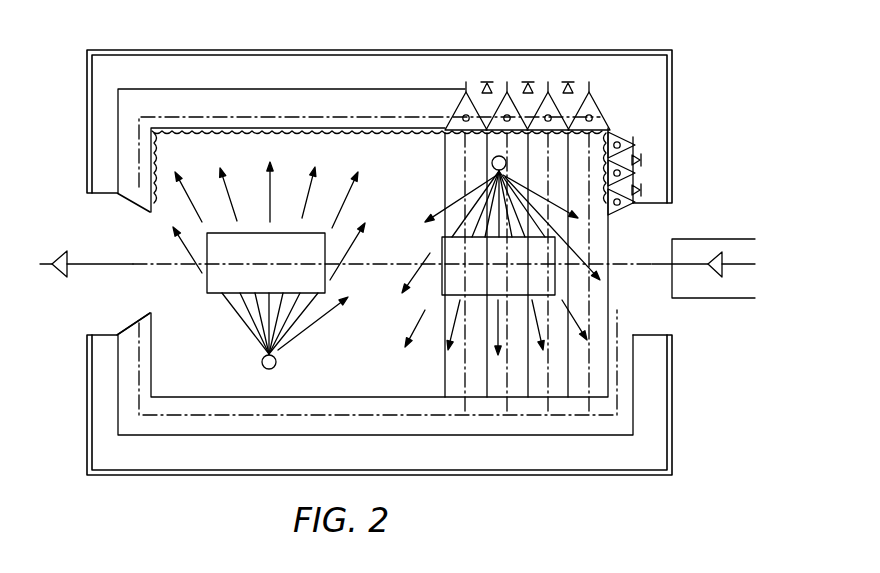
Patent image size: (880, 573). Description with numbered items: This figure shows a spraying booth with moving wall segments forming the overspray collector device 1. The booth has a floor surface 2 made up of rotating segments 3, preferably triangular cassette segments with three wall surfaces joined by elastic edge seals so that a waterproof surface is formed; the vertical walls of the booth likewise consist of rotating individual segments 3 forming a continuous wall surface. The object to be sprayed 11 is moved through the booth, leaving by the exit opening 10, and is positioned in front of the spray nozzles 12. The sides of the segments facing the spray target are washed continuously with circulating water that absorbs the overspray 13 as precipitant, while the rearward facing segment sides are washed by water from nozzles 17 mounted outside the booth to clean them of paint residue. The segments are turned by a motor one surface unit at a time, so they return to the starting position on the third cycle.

The overspray collector device 1 is at (364, 46).
The floor surface 2 is at (382, 398).
The rotating segments 3 is at (597, 110).
The exit opening 10 is at (110, 297).
The object to be sprayed 11 is at (275, 258).
The spray nozzles 12 is at (262, 361).
The overspray 13 is at (180, 243).
The nozzles for cleaning vertical segments 17 is at (528, 80).